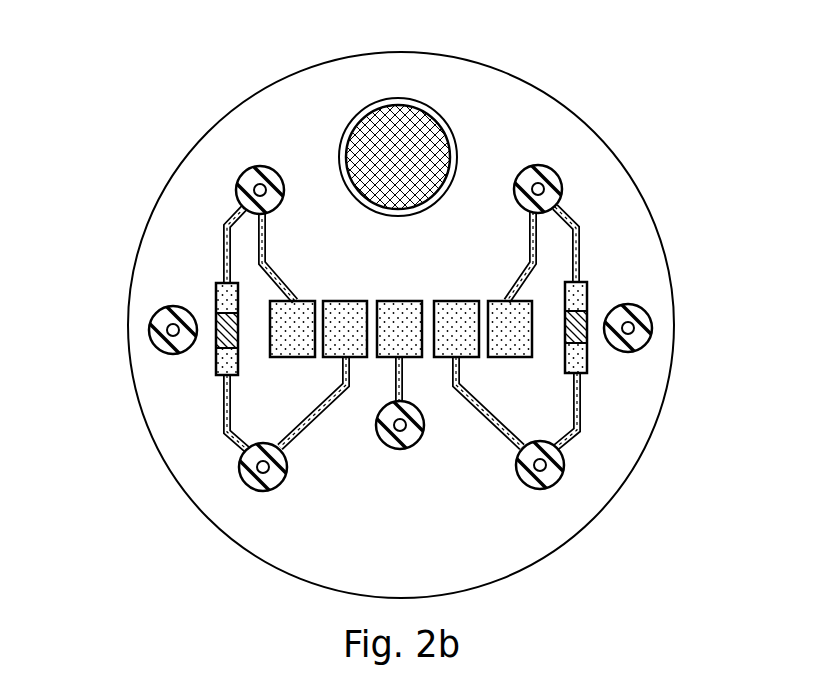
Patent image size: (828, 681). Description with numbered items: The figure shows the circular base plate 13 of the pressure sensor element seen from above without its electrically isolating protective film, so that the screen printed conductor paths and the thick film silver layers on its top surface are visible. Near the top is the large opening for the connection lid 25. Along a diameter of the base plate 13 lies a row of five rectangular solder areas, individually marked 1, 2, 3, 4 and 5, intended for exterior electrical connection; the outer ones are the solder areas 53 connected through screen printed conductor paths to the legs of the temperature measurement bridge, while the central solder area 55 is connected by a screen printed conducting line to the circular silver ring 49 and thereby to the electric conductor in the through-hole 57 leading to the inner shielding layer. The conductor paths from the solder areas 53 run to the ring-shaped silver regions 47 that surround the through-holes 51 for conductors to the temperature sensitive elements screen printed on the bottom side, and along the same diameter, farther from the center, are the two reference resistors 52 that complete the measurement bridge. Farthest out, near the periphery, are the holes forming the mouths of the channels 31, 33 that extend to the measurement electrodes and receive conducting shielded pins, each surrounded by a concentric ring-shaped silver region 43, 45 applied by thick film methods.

The base plate 13 is at (297, 130).
The connection lid 25 is at (440, 112).
The ring-shaped silver region 47 is at (557, 167).
The through-hole 51 is at (545, 189).
The rectangular solder area 53 is at (401, 292).
The central rectangular solder area 55 is at (399, 292).
The ring-shaped silver region 45 is at (174, 306).
The channel 33 is at (160, 345).
The ring-shaped silver region 43 is at (642, 306).
The channel 31 is at (632, 330).
The reference resistor 52 is at (585, 360).
The circular silver ring 49 is at (383, 445).
The through-hole 57 is at (407, 426).
The electrode 1 is at (292, 308).
The electrode 2 is at (345, 308).
The electrode 3 is at (392, 253).
The electrode 4 is at (456, 308).
The electrode 5 is at (510, 308).